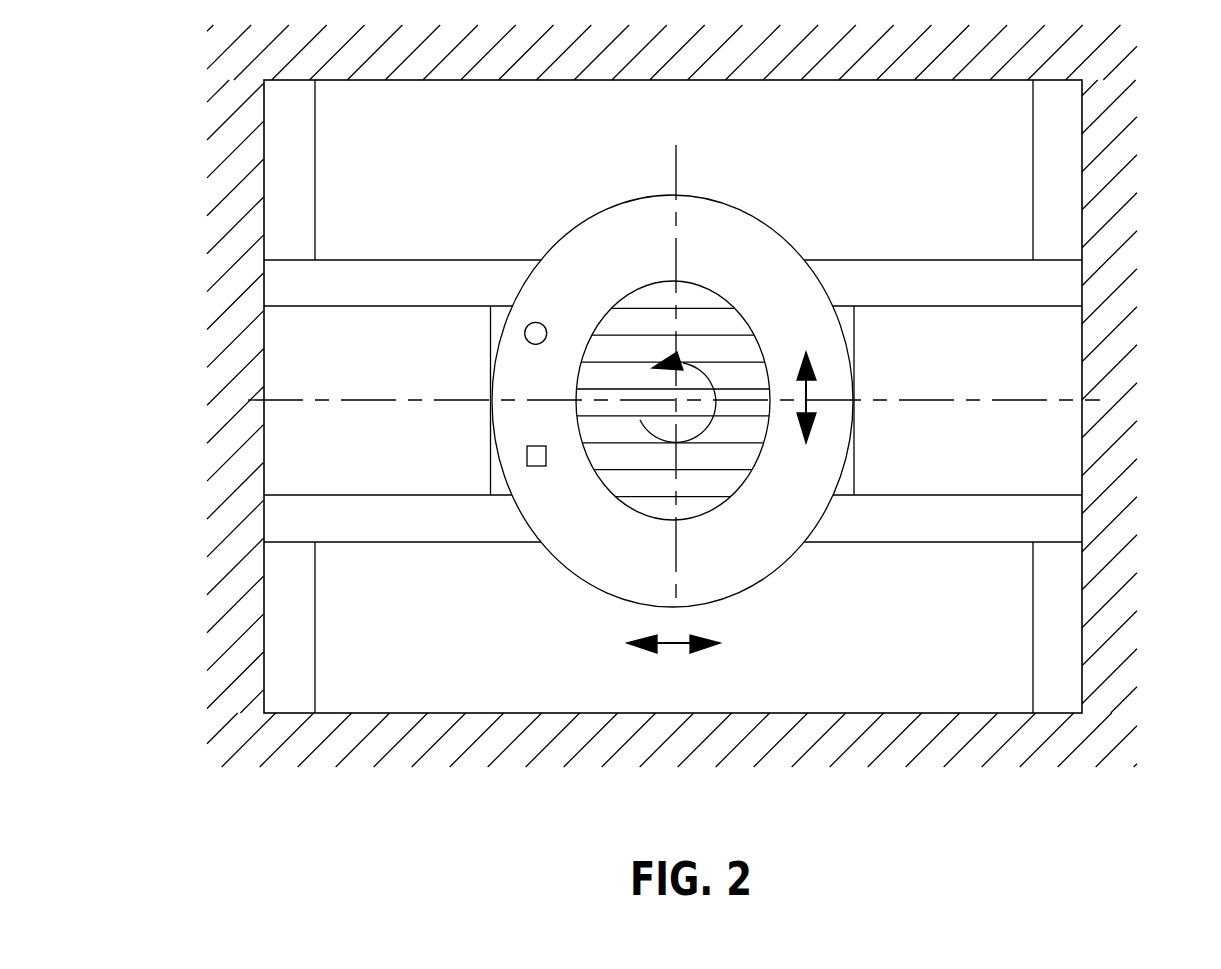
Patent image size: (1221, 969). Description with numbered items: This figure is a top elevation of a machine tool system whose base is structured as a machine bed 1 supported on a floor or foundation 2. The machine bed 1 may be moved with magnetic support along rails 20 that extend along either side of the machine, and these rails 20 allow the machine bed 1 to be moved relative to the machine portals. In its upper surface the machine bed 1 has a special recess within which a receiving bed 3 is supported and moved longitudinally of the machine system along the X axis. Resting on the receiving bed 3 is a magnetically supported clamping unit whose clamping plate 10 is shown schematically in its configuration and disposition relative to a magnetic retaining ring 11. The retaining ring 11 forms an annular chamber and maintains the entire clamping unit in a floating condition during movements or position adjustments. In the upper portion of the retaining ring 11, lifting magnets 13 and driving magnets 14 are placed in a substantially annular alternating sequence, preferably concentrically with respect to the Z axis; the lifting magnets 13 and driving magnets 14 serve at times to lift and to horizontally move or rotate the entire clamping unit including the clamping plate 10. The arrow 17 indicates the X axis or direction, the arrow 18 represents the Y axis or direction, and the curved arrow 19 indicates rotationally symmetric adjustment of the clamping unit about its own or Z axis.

The machine bed 1 is at (289, 277).
The floor or foundation 2 is at (1003, 673).
The receiving bed 3 is at (505, 477).
The clamping plate 10 is at (622, 480).
The magnetic retaining ring 11 is at (660, 237).
The lifting magnets 13 is at (528, 327).
The driving magnets 14 is at (527, 450).
The arrow indicating X axis 17 is at (811, 388).
The arrow indicating Y axis 18 is at (678, 652).
The arrow indicating rotational movement 19 is at (707, 375).
The rails 20 is at (1060, 195).